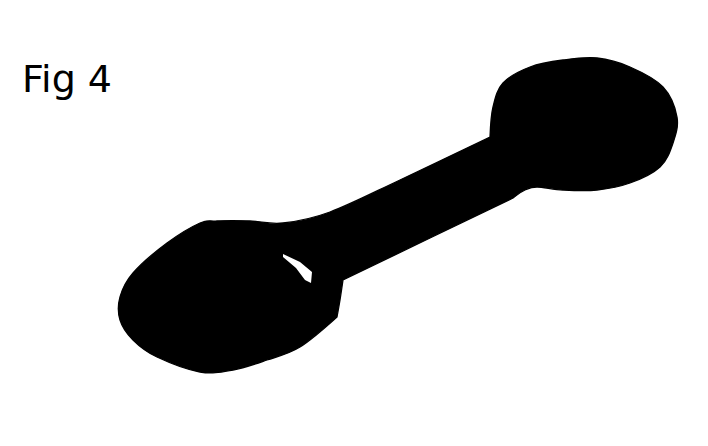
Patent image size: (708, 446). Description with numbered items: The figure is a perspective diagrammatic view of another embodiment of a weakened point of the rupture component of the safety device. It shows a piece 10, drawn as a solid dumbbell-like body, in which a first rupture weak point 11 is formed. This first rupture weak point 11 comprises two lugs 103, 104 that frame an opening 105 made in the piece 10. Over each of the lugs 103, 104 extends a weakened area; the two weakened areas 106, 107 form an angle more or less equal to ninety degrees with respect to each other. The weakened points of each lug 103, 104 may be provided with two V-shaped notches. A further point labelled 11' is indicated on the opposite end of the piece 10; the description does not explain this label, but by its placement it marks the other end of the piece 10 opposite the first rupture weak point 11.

The piece 10 is at (432, 103).
The first rupture weak point 11 is at (332, 183).
The second end portion 11' is at (538, 229).
The lug 103 is at (270, 222).
The lug 104 is at (340, 312).
The opening 105 is at (302, 345).
The weakened area 106 is at (288, 228).
The weakened area 107 is at (345, 282).